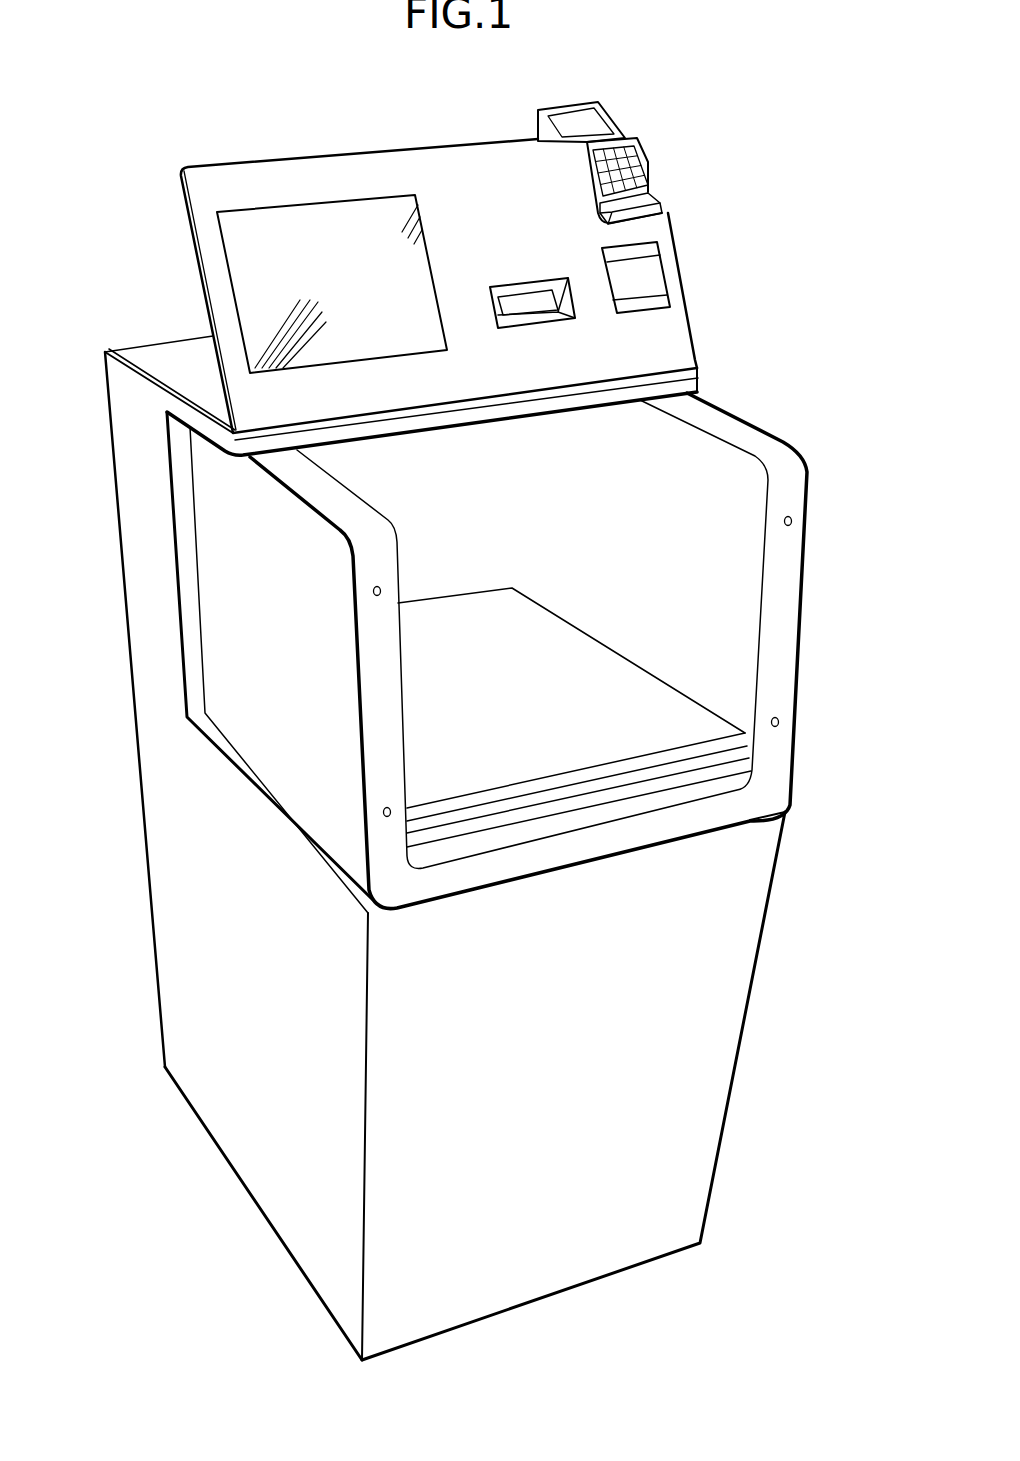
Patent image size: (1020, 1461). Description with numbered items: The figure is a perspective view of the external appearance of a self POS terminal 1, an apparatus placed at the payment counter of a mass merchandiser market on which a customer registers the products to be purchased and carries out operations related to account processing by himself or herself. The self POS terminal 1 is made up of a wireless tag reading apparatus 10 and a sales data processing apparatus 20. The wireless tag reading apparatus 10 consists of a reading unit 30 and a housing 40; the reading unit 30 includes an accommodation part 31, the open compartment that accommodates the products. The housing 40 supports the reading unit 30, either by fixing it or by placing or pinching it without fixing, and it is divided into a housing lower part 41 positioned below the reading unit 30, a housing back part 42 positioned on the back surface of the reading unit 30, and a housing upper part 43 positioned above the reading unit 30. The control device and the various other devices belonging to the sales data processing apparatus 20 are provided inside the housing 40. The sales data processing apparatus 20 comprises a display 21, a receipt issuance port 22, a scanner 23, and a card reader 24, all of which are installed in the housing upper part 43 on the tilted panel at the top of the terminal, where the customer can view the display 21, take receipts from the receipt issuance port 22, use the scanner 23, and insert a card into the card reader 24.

The self POS terminal 1 is at (822, 130).
The wireless tag reading apparatus 10 is at (836, 608).
The sales data processing apparatus 20 is at (492, 105).
The display 21 is at (375, 197).
The receipt issuance port 22 is at (547, 278).
The scanner 23 is at (667, 275).
The card reader 24 is at (613, 118).
The reading unit 30 is at (790, 440).
The accommodation part 31 is at (558, 580).
The housing 40 is at (690, 1052).
The housing lower part 41 is at (280, 1130).
The housing back part 42 is at (145, 587).
The housing upper part 43 is at (190, 422).